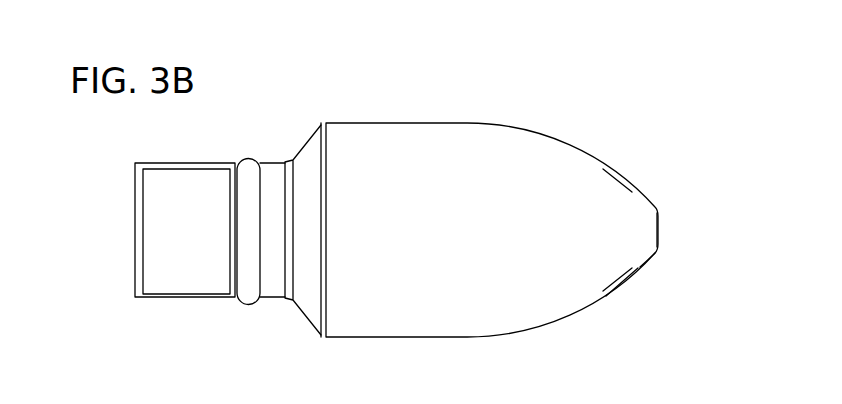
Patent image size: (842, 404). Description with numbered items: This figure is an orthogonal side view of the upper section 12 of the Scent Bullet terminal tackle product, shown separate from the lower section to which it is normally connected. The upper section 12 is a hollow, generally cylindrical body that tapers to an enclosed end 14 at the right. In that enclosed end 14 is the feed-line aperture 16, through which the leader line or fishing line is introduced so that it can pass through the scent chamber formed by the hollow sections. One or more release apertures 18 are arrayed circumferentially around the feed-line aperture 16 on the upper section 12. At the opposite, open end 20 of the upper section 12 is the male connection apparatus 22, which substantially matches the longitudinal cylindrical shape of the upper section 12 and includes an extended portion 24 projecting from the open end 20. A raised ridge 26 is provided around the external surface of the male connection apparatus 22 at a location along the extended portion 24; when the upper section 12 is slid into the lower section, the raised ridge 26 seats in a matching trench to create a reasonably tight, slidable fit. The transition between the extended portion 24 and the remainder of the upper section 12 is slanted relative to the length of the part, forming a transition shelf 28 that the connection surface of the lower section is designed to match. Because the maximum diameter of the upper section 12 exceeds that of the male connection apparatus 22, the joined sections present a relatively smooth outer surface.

The upper section 12 is at (412, 128).
The enclosed end 14 is at (664, 264).
The feed-line aperture 16 is at (663, 227).
The release apertures 18 is at (631, 184).
The open end 20 is at (122, 223).
The male connection apparatus 22 is at (212, 145).
The extended portion 24 is at (178, 292).
The raised ridge 26 is at (248, 295).
The transition shelf 28 is at (310, 302).